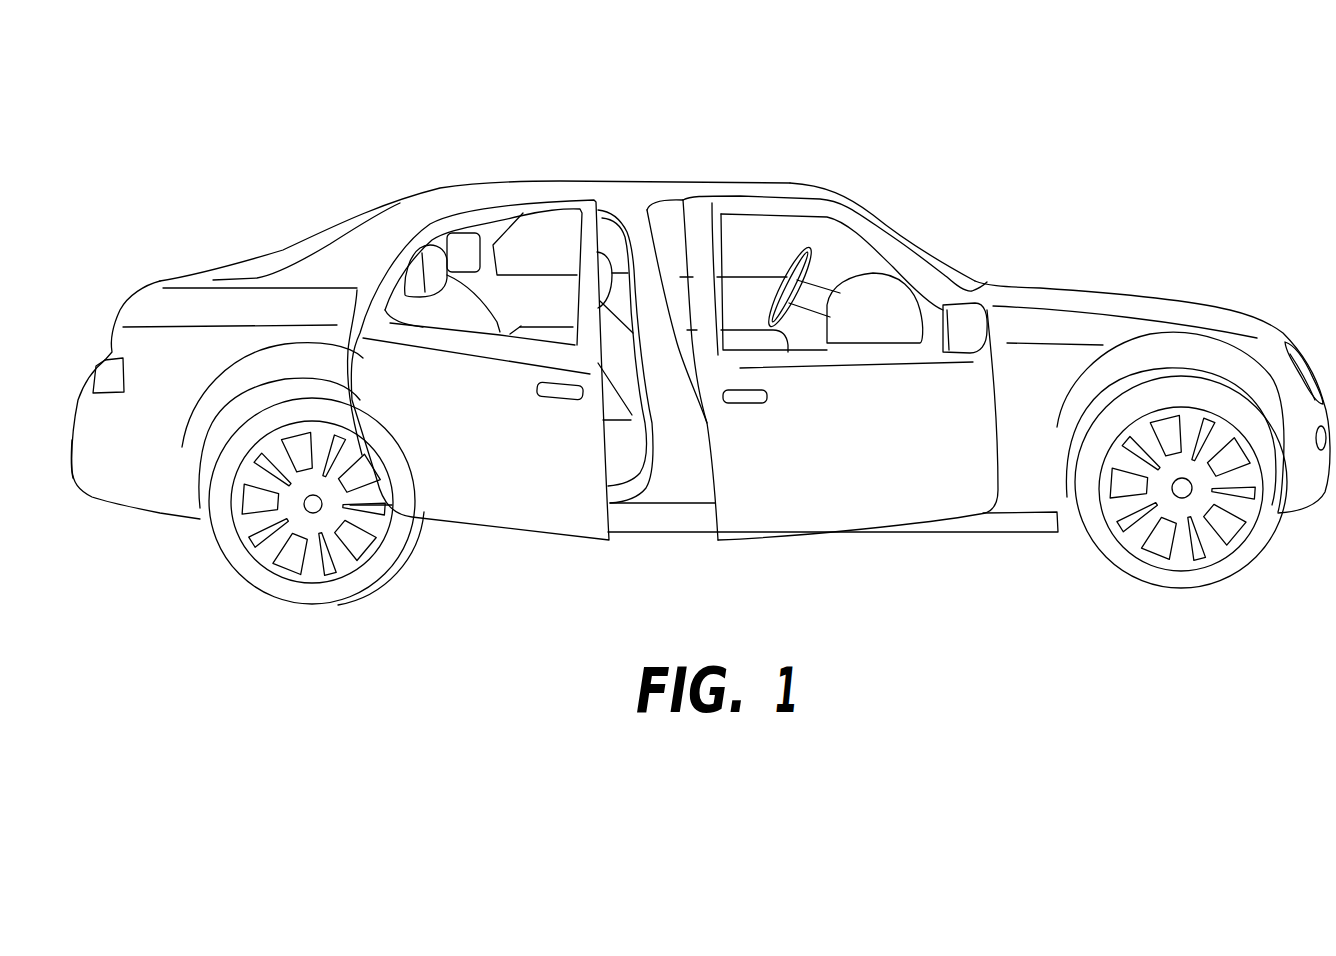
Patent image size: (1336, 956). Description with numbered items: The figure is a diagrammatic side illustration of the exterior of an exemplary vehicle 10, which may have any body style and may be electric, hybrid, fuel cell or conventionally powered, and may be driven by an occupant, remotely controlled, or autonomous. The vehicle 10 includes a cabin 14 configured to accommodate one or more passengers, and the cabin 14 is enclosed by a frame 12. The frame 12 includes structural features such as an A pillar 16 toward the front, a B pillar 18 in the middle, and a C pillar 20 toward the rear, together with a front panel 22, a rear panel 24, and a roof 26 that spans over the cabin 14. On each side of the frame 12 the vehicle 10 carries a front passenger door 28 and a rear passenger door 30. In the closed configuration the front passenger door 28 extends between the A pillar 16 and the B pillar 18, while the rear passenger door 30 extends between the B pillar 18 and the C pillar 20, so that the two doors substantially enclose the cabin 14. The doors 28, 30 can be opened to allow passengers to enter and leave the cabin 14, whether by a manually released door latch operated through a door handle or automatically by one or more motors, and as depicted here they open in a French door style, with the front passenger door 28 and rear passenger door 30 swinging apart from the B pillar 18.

The vehicle 10 is at (1170, 178).
The frame 12 is at (213, 183).
The cabin 14 is at (676, 228).
The A pillar 16 is at (903, 227).
The B pillar 18 is at (649, 286).
The C pillar 20 is at (358, 263).
The front panel 22 is at (1028, 460).
The rear panel 24 is at (145, 412).
The roof 26 is at (518, 182).
The front passenger door 28 is at (770, 510).
The rear passenger door 30 is at (480, 487).